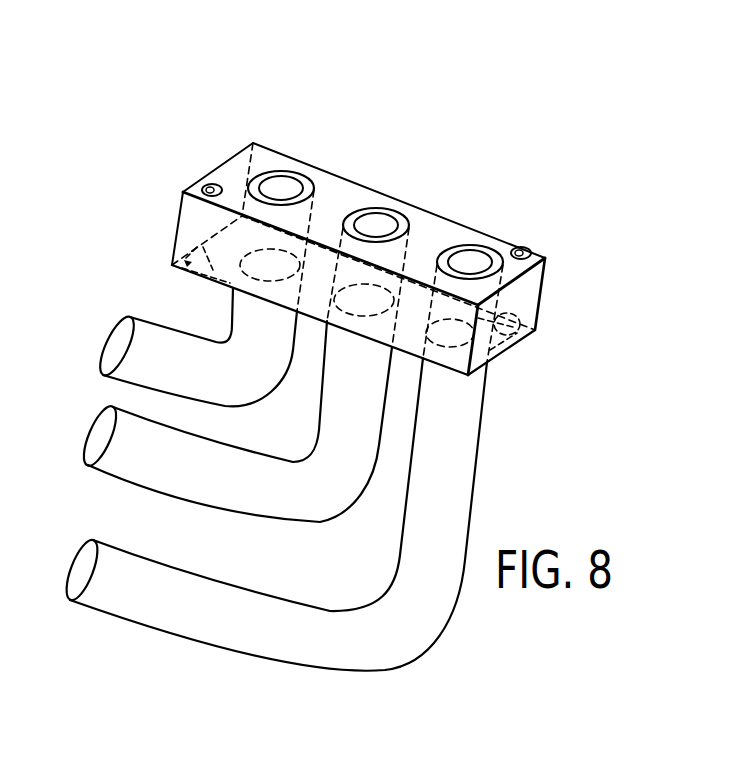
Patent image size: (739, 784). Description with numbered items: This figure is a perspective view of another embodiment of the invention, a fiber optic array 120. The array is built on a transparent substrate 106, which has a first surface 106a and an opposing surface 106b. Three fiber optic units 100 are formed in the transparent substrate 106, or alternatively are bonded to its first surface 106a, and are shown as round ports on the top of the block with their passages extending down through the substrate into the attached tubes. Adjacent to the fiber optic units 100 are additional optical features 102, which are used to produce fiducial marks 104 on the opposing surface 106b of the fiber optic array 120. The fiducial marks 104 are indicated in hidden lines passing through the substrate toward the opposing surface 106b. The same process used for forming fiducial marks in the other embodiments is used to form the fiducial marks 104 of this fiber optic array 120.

The fiber optic array 120 is at (544, 120).
The fiber optic units 100 is at (372, 214).
The additional optical features 102 is at (209, 187).
The fiducial marks 104 is at (168, 270).
The transparent substrate 106 is at (546, 282).
The first surface 106a is at (425, 217).
The opposing surface 106b is at (517, 357).